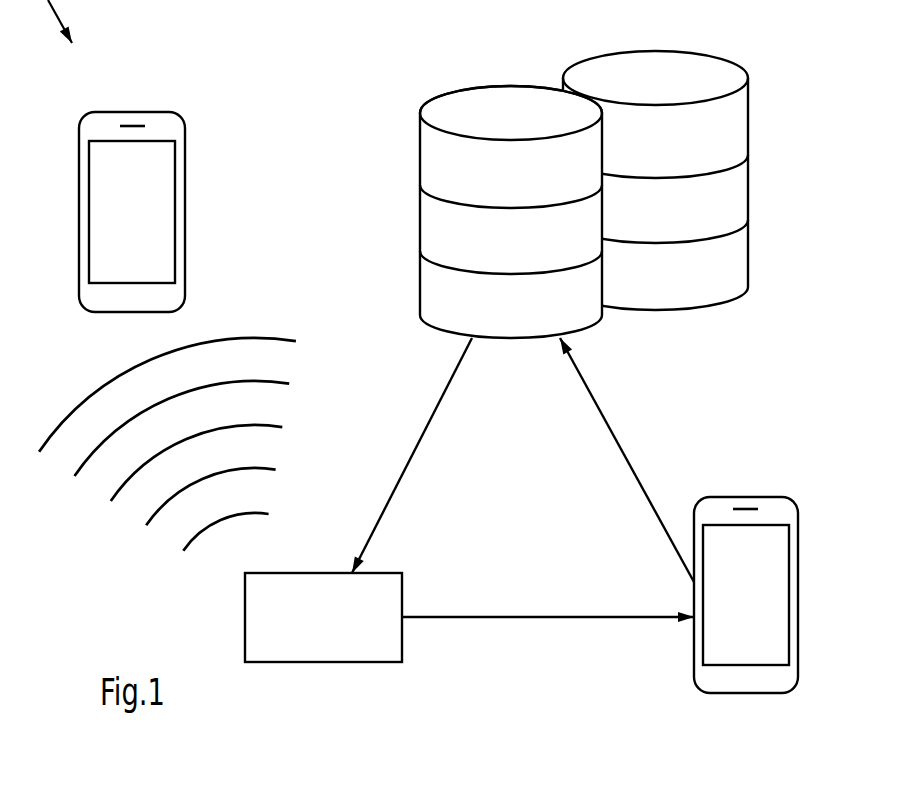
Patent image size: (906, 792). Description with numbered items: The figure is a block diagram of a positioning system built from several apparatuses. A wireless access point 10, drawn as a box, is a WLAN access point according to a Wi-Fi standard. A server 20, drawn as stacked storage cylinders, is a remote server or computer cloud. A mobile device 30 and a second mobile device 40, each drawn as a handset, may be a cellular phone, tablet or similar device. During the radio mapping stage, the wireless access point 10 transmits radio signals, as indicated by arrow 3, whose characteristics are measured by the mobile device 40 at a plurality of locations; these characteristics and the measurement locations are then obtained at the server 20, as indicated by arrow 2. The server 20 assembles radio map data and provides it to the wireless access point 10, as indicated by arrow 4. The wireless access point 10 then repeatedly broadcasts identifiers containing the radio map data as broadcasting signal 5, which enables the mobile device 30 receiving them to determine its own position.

The mobile device 30 is at (79, 166).
The broadcasting signal 5 is at (294, 318).
The server 20 is at (510, 340).
The wireless access point 10 is at (360, 663).
The mobile device 40 is at (750, 497).
The arrow 4 is at (408, 455).
The arrow 2 is at (630, 462).
The arrow 3 is at (548, 620).